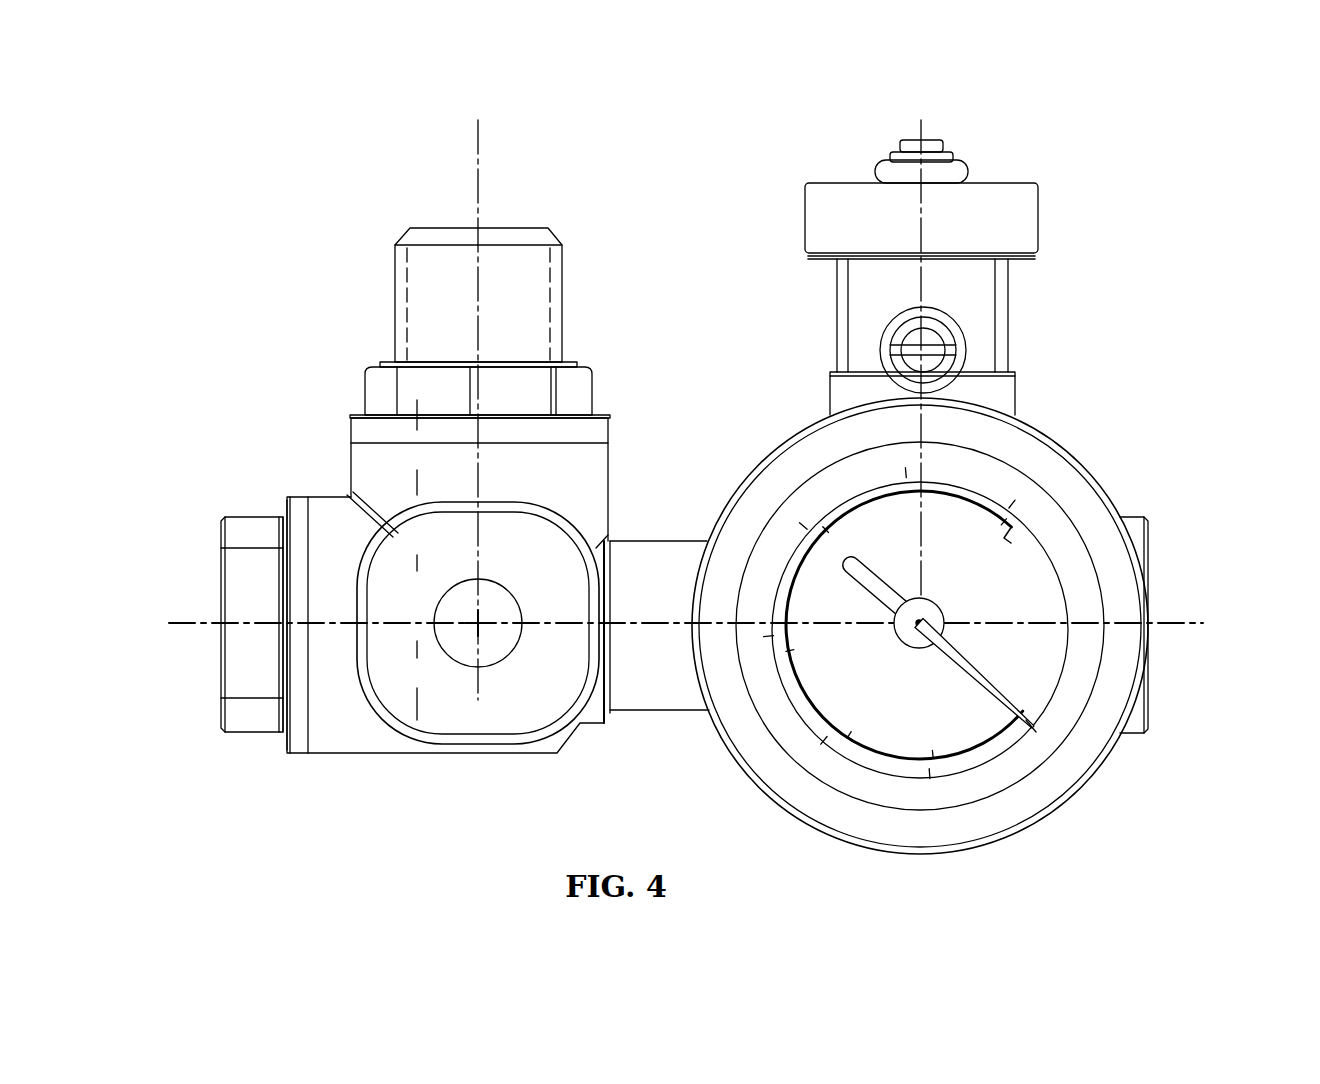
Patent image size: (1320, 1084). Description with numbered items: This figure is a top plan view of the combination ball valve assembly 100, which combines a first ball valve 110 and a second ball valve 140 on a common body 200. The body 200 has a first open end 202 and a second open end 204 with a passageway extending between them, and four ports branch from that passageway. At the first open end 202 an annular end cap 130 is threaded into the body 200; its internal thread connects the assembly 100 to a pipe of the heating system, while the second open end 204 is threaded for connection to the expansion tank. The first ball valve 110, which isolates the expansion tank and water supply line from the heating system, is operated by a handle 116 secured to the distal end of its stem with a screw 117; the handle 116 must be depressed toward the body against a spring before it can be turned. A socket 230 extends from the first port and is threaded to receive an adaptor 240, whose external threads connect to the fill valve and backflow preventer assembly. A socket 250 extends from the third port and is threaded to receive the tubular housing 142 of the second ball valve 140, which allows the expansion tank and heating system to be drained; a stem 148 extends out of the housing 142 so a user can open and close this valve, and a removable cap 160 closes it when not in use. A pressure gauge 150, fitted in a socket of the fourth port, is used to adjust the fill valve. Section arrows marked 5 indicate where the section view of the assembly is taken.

The combination ball valve assembly 100 is at (741, 148).
The first ball valve 110 is at (449, 758).
The handle 116 is at (521, 553).
The screw 117 is at (505, 603).
The annular end cap 130 is at (247, 722).
The second ball valve 140 is at (1014, 287).
The tubular housing 142 is at (995, 343).
The stem 148 is at (893, 345).
The pressure gauge 150 is at (1094, 446).
The removable cap 160 is at (1015, 200).
The body 200 is at (660, 714).
The first open end 202 is at (293, 520).
The second open end 204 is at (1152, 690).
The socket 230 is at (595, 465).
The adaptor 240 is at (540, 313).
The socket 250 is at (832, 400).
The section line 5 is at (169, 615).